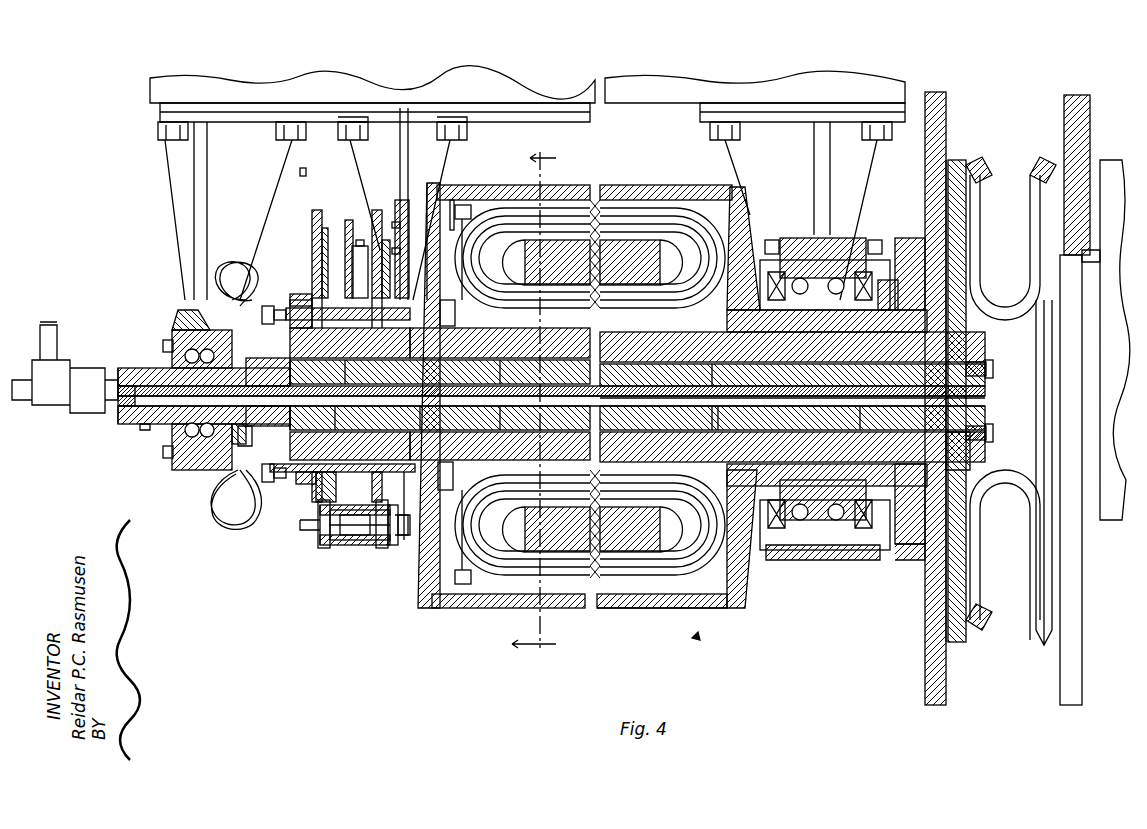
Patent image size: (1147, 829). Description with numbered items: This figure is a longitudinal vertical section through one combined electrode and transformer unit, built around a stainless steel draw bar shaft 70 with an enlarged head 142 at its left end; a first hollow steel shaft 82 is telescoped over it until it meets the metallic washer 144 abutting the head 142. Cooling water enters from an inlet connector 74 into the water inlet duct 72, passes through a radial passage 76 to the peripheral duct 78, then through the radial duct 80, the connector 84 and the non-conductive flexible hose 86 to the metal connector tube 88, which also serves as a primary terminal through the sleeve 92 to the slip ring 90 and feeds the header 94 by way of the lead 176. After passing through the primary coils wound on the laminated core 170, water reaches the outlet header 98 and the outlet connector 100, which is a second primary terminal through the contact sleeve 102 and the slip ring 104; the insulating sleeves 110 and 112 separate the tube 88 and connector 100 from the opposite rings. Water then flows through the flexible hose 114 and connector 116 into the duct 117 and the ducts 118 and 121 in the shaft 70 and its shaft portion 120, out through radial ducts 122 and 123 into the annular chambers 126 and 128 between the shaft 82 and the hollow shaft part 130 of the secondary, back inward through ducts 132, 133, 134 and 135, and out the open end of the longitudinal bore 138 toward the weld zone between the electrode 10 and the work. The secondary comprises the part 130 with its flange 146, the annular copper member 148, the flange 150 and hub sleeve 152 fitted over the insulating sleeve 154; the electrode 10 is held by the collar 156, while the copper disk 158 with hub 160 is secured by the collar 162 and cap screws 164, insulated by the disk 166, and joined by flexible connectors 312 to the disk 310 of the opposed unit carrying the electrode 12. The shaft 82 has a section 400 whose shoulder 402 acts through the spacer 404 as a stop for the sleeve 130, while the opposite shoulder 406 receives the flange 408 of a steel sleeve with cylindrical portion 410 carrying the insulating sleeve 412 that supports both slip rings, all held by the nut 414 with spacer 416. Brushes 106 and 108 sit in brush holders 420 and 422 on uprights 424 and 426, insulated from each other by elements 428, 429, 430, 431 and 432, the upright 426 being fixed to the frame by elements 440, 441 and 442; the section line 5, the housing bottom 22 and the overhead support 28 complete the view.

The electrode 10 is at (925, 670).
The electrode 12 is at (1060, 674).
The housing bottom 22 is at (644, 620).
The support beam 28 is at (683, 98).
The section line 5 is at (523, 402).
The draw bar shaft 70 is at (792, 396).
The water inlet duct 72 is at (138, 388).
The inlet connector 74 is at (75, 388).
The radial passage 76 is at (178, 328).
The peripheral duct 78 is at (198, 320).
The radial duct 80 is at (252, 372).
The first hollow steel shaft 82 is at (341, 372).
The connector 84 is at (262, 300).
The flexible hose 86 is at (235, 268).
The connector tube 88 is at (270, 306).
The slip ring 90 is at (302, 296).
The sleeve 92 is at (330, 296).
The header 94 is at (455, 314).
The outlet header 98 is at (452, 480).
The outlet connector 100 is at (286, 480).
The contact sleeve 102 is at (358, 540).
The slip ring 104 is at (375, 545).
The brushes 106 is at (372, 220).
The brushes 108 is at (303, 300).
The insulating sleeve 110 is at (362, 296).
The insulating sleeve 112 is at (310, 484).
The flexible hose 114 is at (232, 510).
The connector 116 is at (210, 470).
The duct 117 is at (294, 416).
The duct 118 is at (190, 470).
The shaft 120 is at (482, 398).
The duct 121 is at (440, 416).
The radial duct 122 is at (508, 366).
The radial duct 123 is at (508, 412).
The annular chamber 126 is at (640, 362).
The annular chamber 128 is at (645, 444).
The hollow metallic shaft part 130 is at (712, 362).
The radial duct 132 is at (730, 362).
The radial duct 133 is at (725, 416).
The radial duct 134 is at (792, 418).
The radial duct 135 is at (722, 418).
The longitudinal bore 138 is at (820, 398).
The enlarged head 142 is at (125, 422).
The metallic washer 144 is at (142, 424).
The flange 146 is at (430, 200).
The annular copper member 148 is at (628, 187).
The flange 150 is at (745, 240).
The hub sleeve 152 is at (878, 300).
The insulating sleeve 154 is at (727, 318).
The collar 156 is at (918, 238).
The copper disk 158 is at (978, 175).
The hub 160 is at (958, 452).
The collar 162 is at (984, 420).
The cap screws 164 is at (984, 370).
The insulating disk 166 is at (962, 165).
The laminated metal core 170 is at (630, 266).
The lead 176 is at (455, 210).
The disk 310 is at (1040, 620).
The flexible connectors 312 is at (986, 250).
The section of increased diameter 400 is at (384, 366).
The shoulder 402 is at (432, 344).
The spacer 404 is at (432, 442).
The shoulder 406 is at (382, 428).
The flange 408 is at (395, 472).
The cylindrical portion 410 is at (336, 416).
The insulating sleeve 412 is at (320, 500).
The nut 414 is at (300, 470).
The spacer 416 is at (278, 372).
The brush holder 420 is at (318, 210).
The brush holder 422 is at (378, 210).
The upright 424 is at (356, 540).
The upright 426 is at (408, 470).
The insulating element 428 is at (350, 540).
The insulating element 429 is at (335, 545).
The insulating element 430 is at (358, 545).
The insulating element 431 is at (392, 545).
The insulating element 432 is at (400, 545).
The fixing element 440 is at (352, 128).
The fixing element 441 is at (402, 112).
The fixing element 442 is at (452, 128).